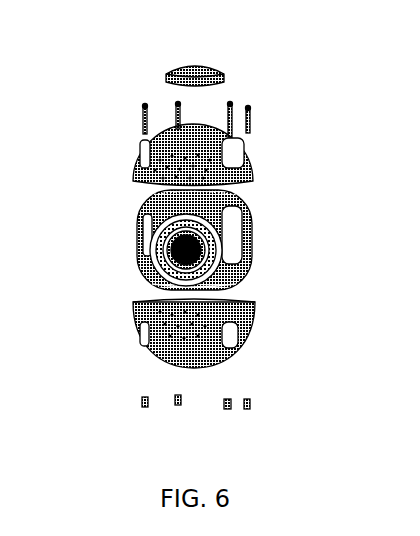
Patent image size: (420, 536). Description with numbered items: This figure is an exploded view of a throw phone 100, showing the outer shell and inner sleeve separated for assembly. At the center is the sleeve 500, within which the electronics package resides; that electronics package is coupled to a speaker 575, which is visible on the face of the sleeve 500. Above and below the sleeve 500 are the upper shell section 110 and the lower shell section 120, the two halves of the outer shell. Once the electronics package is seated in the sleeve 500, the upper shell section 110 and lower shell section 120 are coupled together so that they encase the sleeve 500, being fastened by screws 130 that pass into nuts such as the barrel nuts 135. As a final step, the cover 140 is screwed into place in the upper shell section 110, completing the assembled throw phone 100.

The throw phone 100 is at (285, 117).
The upper shell section 110 is at (245, 170).
The lower shell section 120 is at (170, 350).
The screws 130 is at (145, 125).
The barrel nuts 135 is at (177, 405).
The cover 140 is at (195, 60).
The sleeve 500 is at (230, 206).
The speaker 575 is at (192, 252).